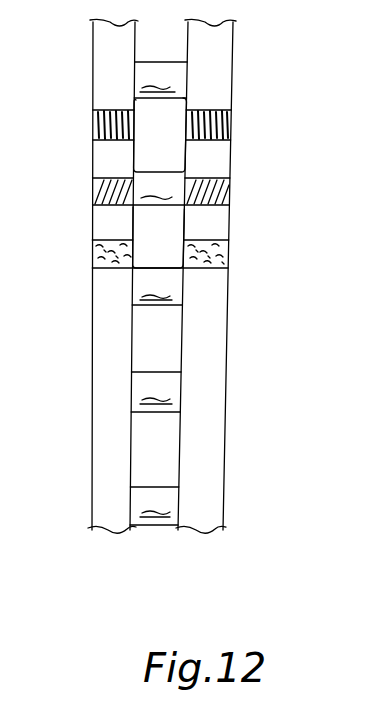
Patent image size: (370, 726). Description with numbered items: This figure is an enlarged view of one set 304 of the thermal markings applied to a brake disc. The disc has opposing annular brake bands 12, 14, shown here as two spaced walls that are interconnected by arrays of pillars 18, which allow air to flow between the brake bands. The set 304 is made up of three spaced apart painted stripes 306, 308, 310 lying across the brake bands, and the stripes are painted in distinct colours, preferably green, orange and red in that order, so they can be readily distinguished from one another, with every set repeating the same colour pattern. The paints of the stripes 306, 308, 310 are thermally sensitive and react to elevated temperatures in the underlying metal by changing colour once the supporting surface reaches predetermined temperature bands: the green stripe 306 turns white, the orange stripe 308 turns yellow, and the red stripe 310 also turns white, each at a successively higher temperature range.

The annular brake band 12 is at (92, 355).
The annular brake band 14 is at (226, 348).
The pillars 18 is at (175, 82).
The set of thermal markings 304 is at (170, 185).
The painted stripe 306 is at (242, 130).
The painted stripe 308 is at (237, 197).
The painted stripe 310 is at (237, 257).